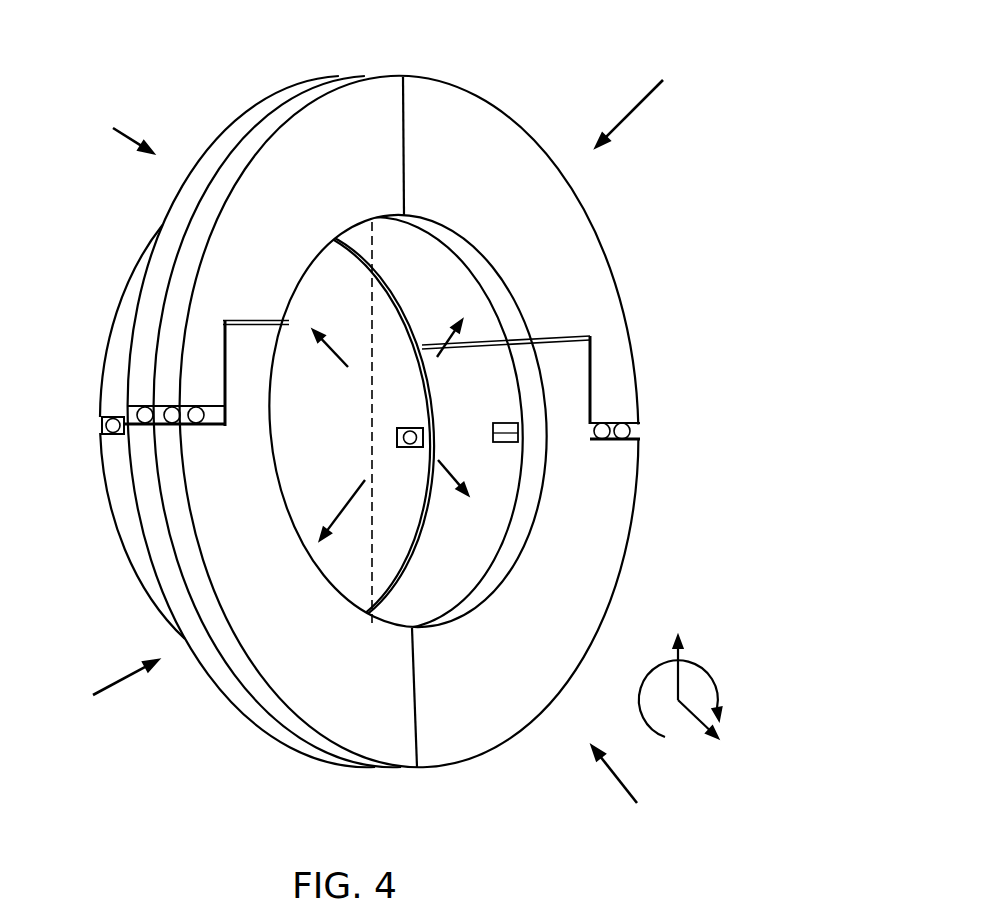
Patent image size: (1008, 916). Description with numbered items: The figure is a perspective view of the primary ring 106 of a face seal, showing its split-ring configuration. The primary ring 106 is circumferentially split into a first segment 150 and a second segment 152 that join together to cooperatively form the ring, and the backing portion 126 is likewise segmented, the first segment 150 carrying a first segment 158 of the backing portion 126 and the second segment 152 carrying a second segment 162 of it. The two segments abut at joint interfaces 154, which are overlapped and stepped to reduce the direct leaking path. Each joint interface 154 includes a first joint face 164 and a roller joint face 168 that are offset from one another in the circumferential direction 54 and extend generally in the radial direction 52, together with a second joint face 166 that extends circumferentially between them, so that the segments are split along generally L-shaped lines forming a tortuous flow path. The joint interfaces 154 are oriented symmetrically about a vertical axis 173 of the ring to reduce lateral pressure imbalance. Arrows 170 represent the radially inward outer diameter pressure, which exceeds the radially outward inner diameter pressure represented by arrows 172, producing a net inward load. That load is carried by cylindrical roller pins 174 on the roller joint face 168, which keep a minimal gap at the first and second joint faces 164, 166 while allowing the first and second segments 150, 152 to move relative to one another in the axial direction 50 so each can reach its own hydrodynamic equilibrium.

The axial direction 50 is at (697, 725).
The radial direction 52 is at (676, 665).
The circumferential direction 54 is at (718, 700).
The primary ring 106 is at (582, 195).
The backing portion 126 is at (213, 142).
The first segment 150 is at (440, 104).
The second segment 152 is at (514, 712).
The joint interface 154 is at (89, 423).
The first segment of the backing portion 158 is at (262, 113).
The second segment of the backing portion 162 is at (122, 508).
The first joint face 164 is at (244, 319).
The second joint face 166 is at (222, 368).
The roller joint face 168 is at (205, 406).
The arrows representing outer diameter pressure 170 is at (113, 127).
The arrows representing inner diameter pressure 172 is at (340, 348).
The vertical axis 173 is at (371, 400).
The roller pin 174 is at (108, 430).